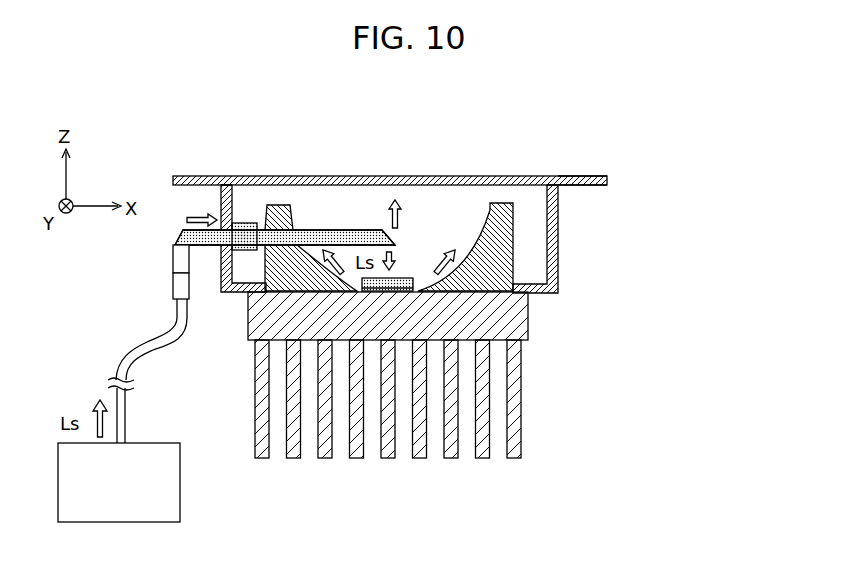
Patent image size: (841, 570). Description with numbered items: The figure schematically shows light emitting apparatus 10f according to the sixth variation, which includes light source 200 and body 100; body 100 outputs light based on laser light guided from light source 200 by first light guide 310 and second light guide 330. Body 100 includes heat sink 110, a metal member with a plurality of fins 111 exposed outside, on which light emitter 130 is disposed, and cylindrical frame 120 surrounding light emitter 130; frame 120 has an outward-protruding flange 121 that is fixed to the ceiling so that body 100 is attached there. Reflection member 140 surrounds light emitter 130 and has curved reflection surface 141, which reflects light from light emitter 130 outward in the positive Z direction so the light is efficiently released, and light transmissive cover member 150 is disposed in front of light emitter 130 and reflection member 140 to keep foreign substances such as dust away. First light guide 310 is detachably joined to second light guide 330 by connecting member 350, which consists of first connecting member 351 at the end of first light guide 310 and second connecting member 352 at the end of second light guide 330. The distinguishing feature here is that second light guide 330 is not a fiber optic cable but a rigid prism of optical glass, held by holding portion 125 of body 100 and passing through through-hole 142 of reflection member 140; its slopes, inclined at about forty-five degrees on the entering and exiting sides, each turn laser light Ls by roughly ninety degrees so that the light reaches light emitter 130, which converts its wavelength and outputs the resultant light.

The light emitting apparatus 10f is at (646, 143).
The body 100 is at (431, 413).
The heat sink 110 is at (528, 327).
The fins 111 is at (422, 460).
The frame 120 is at (401, 200).
The flange 121 is at (586, 187).
The holding portion 125 is at (245, 222).
The light emitter 130 is at (403, 270).
The reflection member 140 is at (427, 260).
The reflection surface 141 is at (483, 233).
The through-hole 142 is at (259, 222).
The cover member 150 is at (487, 176).
The light source 200 is at (180, 480).
The first light guide 310 is at (120, 358).
The second light guide 330 is at (340, 229).
The connecting member 350 is at (117, 270).
The first connecting member 351 is at (173, 287).
The second connecting member 352 is at (173, 258).